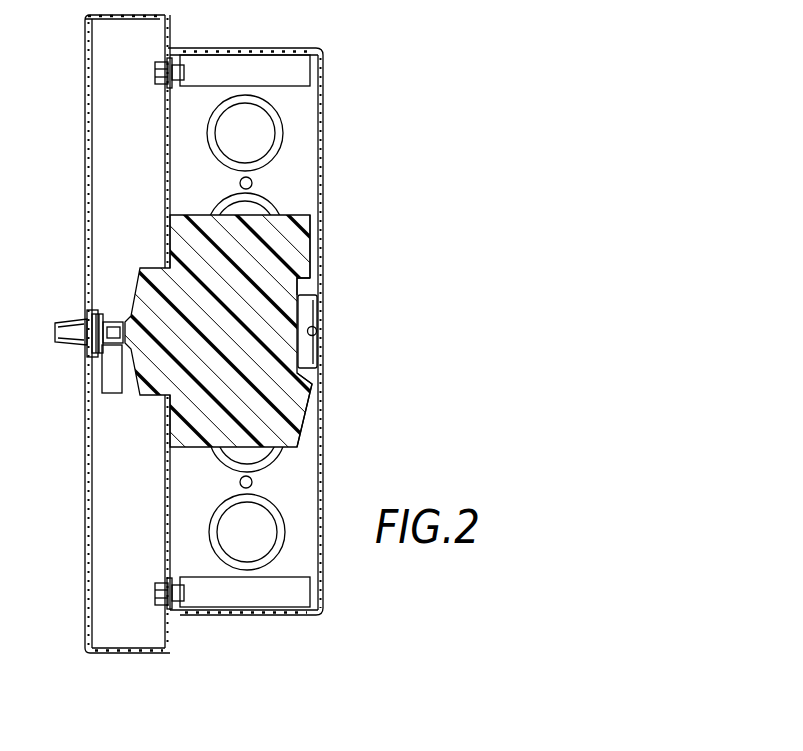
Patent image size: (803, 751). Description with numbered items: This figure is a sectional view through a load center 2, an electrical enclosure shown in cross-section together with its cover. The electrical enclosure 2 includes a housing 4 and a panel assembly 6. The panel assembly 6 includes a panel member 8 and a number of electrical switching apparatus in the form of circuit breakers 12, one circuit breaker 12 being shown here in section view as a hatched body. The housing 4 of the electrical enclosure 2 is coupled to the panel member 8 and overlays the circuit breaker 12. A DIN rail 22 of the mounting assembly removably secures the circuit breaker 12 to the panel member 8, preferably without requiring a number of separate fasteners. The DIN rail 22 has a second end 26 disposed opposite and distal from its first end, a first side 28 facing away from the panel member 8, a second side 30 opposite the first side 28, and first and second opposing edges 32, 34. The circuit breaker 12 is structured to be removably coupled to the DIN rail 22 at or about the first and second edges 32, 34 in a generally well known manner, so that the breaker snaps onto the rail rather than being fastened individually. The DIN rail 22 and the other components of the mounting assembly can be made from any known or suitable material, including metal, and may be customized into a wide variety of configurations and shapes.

The load center 2 is at (351, 345).
The housing 4 is at (323, 425).
The panel assembly 6 is at (169, 345).
The panel member 8 is at (176, 153).
The circuit breaker 12 is at (305, 230).
The DIN rail 22 is at (320, 316).
The second end 26 is at (351, 300).
The first side 28 is at (328, 300).
The second side 30 is at (318, 330).
The first edge 32 is at (292, 279).
The second edge 34 is at (295, 385).